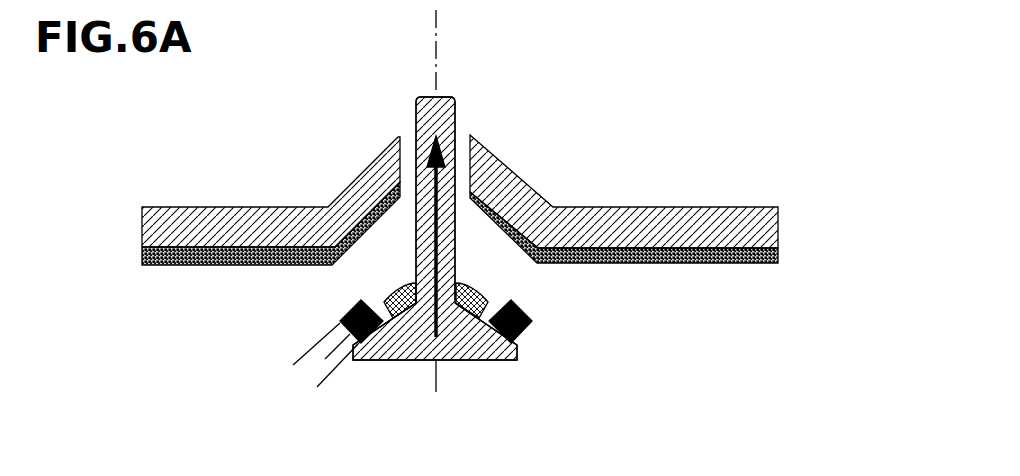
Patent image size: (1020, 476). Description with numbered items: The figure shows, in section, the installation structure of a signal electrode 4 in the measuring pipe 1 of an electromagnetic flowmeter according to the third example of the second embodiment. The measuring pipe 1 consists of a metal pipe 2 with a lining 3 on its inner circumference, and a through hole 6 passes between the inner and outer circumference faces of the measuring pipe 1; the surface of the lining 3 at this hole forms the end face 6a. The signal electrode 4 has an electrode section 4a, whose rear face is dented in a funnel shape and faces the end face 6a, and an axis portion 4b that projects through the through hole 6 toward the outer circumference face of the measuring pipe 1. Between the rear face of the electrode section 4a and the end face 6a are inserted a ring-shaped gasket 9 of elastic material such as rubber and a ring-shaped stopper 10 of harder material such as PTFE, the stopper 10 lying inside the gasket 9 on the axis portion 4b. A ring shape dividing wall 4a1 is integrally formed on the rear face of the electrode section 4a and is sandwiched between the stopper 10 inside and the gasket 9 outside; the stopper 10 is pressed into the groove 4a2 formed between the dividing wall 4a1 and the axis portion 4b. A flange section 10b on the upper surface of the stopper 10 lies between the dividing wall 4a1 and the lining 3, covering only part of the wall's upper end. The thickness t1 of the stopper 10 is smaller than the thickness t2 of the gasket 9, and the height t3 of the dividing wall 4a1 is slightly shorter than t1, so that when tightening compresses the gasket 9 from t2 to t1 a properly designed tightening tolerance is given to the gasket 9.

The measuring pipe 1 is at (273, 163).
The metal pipe 2 is at (624, 222).
The lining 3 is at (730, 263).
The signal electrode 4 is at (433, 232).
The electrode section 4a is at (417, 349).
The ring shape dividing wall 4a1 is at (385, 315).
The groove 4a2 is at (413, 283).
The axis portion 4b is at (455, 118).
The through hole 6 is at (273, 163).
The end face 6a is at (381, 222).
The gasket 9 is at (342, 321).
The stopper 10 is at (434, 276).
The flange section 10b is at (381, 303).
The thickness of the stopper t1 is at (388, 297).
The thickness of the gasket t2 is at (316, 386).
The height of the ring shape dividing wall t3 is at (324, 360).